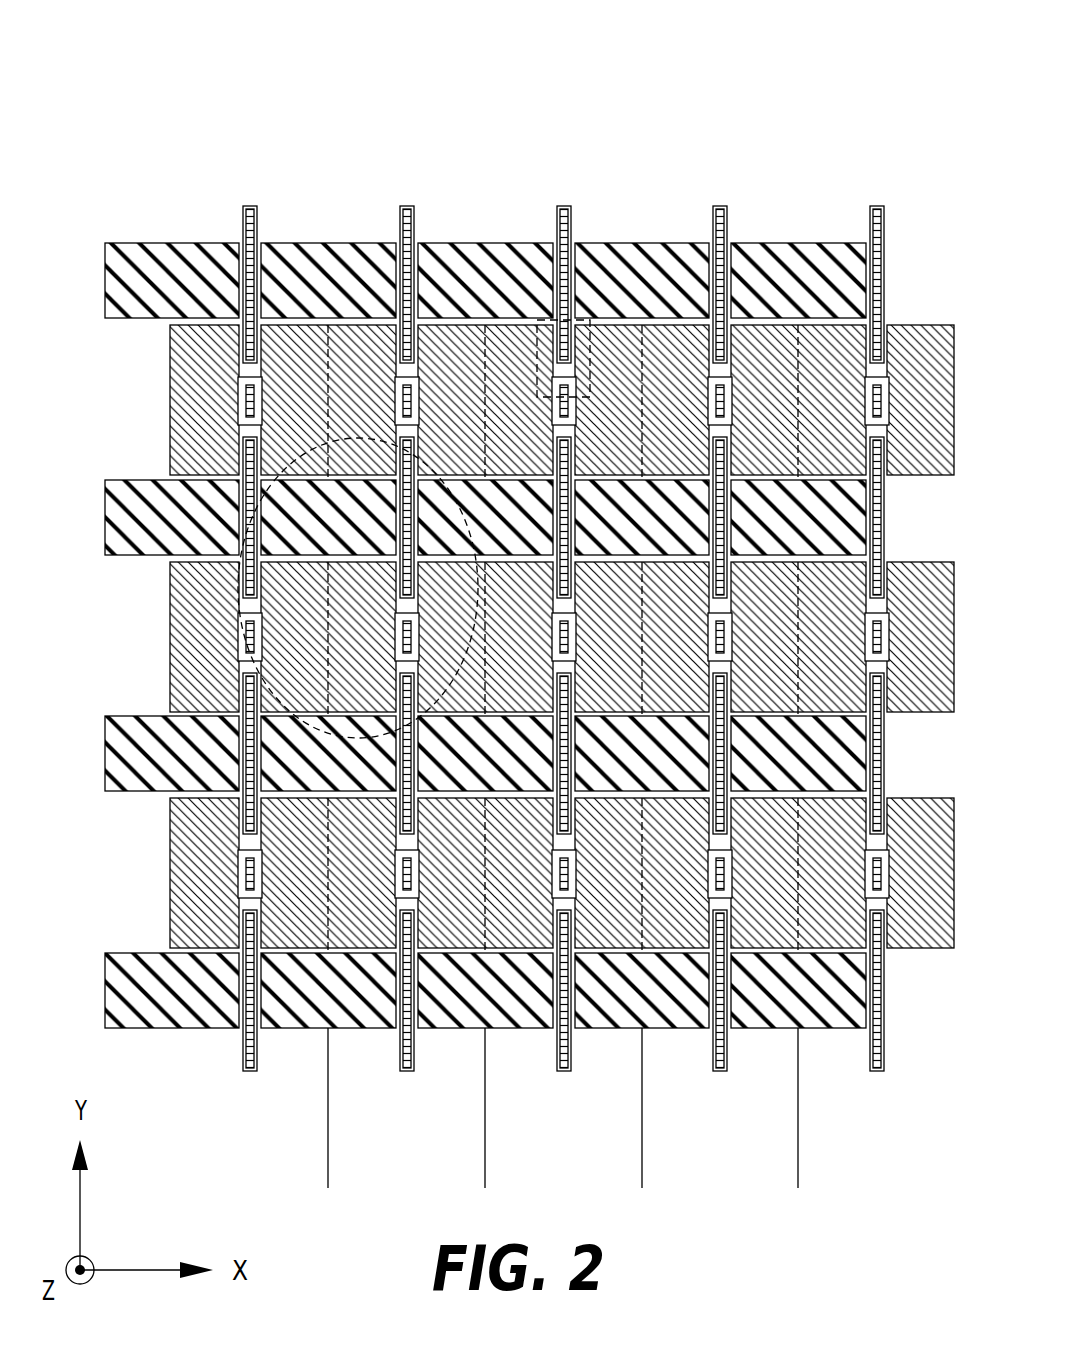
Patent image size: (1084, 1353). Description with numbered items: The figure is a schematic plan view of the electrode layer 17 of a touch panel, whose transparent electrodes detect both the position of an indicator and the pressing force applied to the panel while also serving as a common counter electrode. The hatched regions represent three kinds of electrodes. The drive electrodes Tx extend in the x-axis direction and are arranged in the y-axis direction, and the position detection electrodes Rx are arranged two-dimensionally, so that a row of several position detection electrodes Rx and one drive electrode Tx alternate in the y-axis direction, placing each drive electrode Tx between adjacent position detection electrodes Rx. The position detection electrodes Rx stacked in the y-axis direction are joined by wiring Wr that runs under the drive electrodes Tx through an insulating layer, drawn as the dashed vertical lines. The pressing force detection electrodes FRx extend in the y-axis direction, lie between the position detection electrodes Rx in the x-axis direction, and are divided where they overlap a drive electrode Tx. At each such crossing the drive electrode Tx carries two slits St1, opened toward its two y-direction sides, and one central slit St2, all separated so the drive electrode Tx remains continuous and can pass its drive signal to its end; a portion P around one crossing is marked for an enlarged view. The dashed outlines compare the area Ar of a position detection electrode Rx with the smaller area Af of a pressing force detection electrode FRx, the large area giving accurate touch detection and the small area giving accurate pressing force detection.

The electrode layer 17 is at (852, 115).
The position detection electrode Rx is at (145, 243).
The drive electrode Tx is at (170, 397).
The pressing force detection electrode FRx is at (247, 1050).
The wiring Wr is at (327, 1090).
The slit St1 is at (540, 323).
The slit St2 is at (535, 398).
The area of the position detection electrode Ar is at (236, 530).
The area of the pressing force detection electrode Af is at (258, 648).
The portion P is at (938, 325).